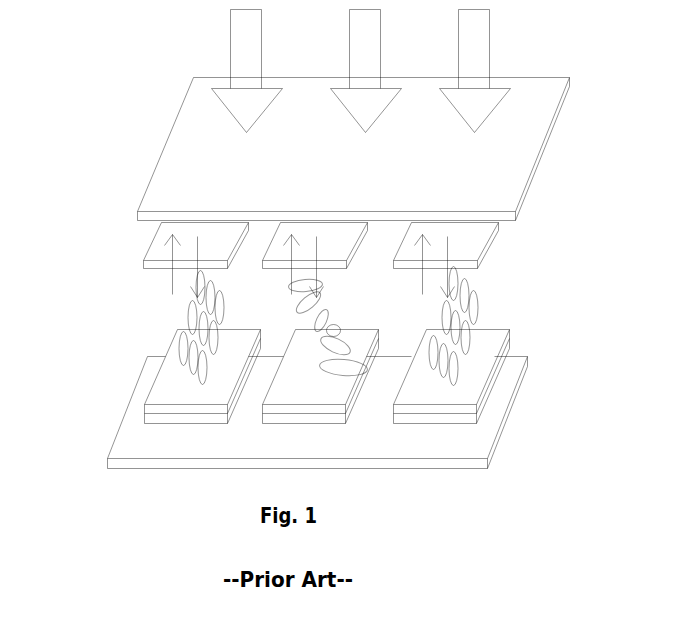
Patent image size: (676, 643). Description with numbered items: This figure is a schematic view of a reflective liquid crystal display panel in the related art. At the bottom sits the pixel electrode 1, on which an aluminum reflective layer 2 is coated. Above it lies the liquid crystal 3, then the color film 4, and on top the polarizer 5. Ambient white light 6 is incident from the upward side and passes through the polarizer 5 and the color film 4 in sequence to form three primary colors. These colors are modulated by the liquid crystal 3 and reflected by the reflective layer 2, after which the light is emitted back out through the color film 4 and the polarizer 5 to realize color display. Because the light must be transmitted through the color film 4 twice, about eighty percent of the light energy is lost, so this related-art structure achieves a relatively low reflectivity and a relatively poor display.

The pixel electrode 1 is at (173, 419).
The reflective layer 2 is at (183, 379).
The liquid crystal 3 is at (185, 312).
The color film 4 is at (143, 252).
The polarizer 5 is at (170, 132).
The ambient white light 6 is at (250, 33).